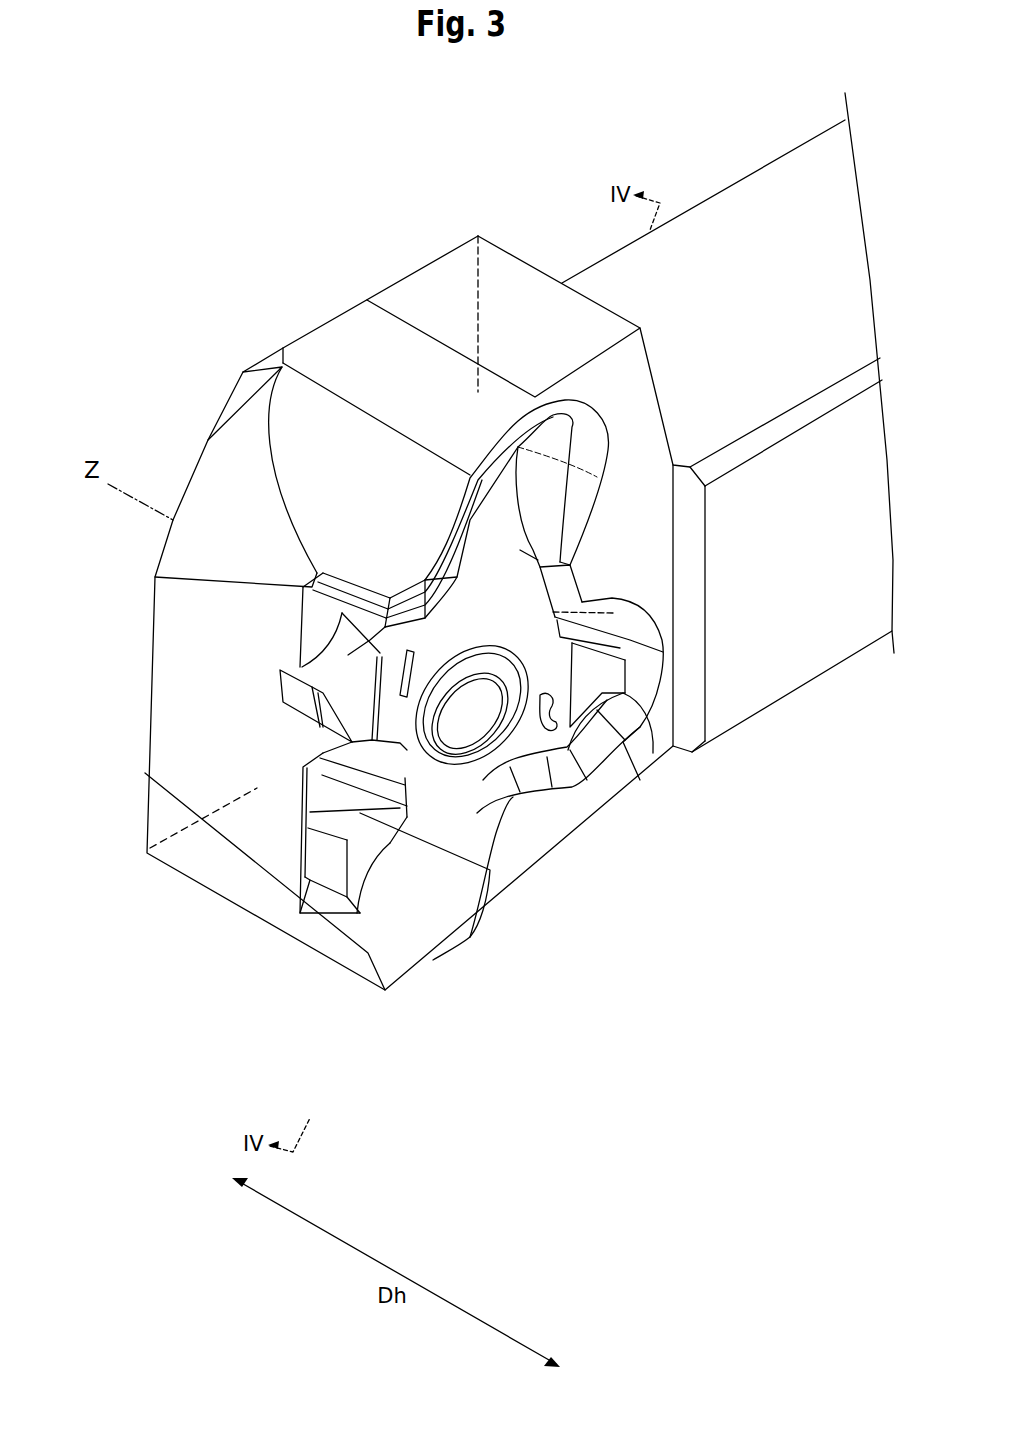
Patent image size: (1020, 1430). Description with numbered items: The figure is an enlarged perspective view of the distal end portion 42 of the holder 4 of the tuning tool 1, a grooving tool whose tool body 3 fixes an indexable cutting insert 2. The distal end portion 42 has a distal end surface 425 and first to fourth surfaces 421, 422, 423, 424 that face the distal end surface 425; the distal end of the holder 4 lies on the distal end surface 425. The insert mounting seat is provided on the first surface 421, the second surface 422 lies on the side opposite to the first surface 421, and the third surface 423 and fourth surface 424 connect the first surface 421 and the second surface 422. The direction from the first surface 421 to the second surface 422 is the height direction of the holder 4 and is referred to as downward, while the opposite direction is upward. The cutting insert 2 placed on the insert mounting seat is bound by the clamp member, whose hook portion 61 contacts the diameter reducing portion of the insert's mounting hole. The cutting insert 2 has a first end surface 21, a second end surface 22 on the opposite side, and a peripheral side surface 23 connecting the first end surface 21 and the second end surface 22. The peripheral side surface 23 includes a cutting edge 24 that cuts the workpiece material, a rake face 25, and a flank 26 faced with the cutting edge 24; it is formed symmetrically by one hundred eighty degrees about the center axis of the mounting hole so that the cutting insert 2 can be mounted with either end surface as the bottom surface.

The tuning tool 1 is at (589, 1097).
The cutting insert 2 is at (417, 853).
The tool body 3 is at (833, 671).
The holder 4 is at (762, 165).
The first end surface 21 is at (450, 800).
The second end surface 22 is at (300, 775).
The peripheral side surface 23 is at (338, 815).
The cutting edge 24 is at (278, 685).
The rake face 25 is at (297, 663).
The flank 26 is at (302, 695).
The distal end portion 42 is at (430, 258).
The hook portion 61 is at (440, 748).
The first surface 421 is at (527, 850).
The second surface 422 is at (358, 348).
The third surface 423 is at (517, 303).
The fourth surface 424 is at (205, 850).
The distal end surface 425 is at (215, 708).